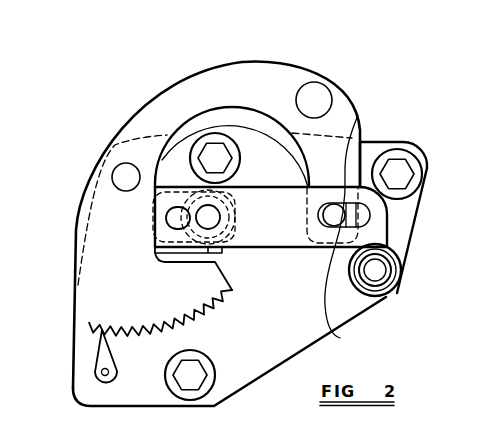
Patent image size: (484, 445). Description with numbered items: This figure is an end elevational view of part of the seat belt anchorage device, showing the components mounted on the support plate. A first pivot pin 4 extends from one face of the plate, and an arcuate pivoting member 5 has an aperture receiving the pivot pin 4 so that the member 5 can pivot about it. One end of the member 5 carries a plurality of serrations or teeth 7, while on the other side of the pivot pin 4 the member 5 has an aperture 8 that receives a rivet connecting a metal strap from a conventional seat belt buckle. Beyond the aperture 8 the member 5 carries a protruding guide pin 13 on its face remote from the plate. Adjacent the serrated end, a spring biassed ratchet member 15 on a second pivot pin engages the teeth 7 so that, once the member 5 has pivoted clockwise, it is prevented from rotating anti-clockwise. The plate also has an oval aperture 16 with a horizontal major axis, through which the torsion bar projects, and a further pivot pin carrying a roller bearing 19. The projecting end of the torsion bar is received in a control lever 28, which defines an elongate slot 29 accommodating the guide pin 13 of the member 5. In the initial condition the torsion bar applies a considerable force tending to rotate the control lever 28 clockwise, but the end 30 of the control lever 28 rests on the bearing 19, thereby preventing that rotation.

The first pivot pin 4 is at (120, 174).
The arcuate pivoting member 5 is at (282, 66).
The serrations or teeth 7 is at (92, 323).
The aperture 8 is at (322, 96).
The guide pin 13 is at (344, 232).
The spring biassed ratchet member 15 is at (98, 358).
The oval aperture 16 is at (172, 207).
The roller bearing 19 is at (388, 287).
The control lever 28 is at (270, 220).
The elongate slot 29 is at (357, 116).
The end of the control lever 30 is at (380, 229).